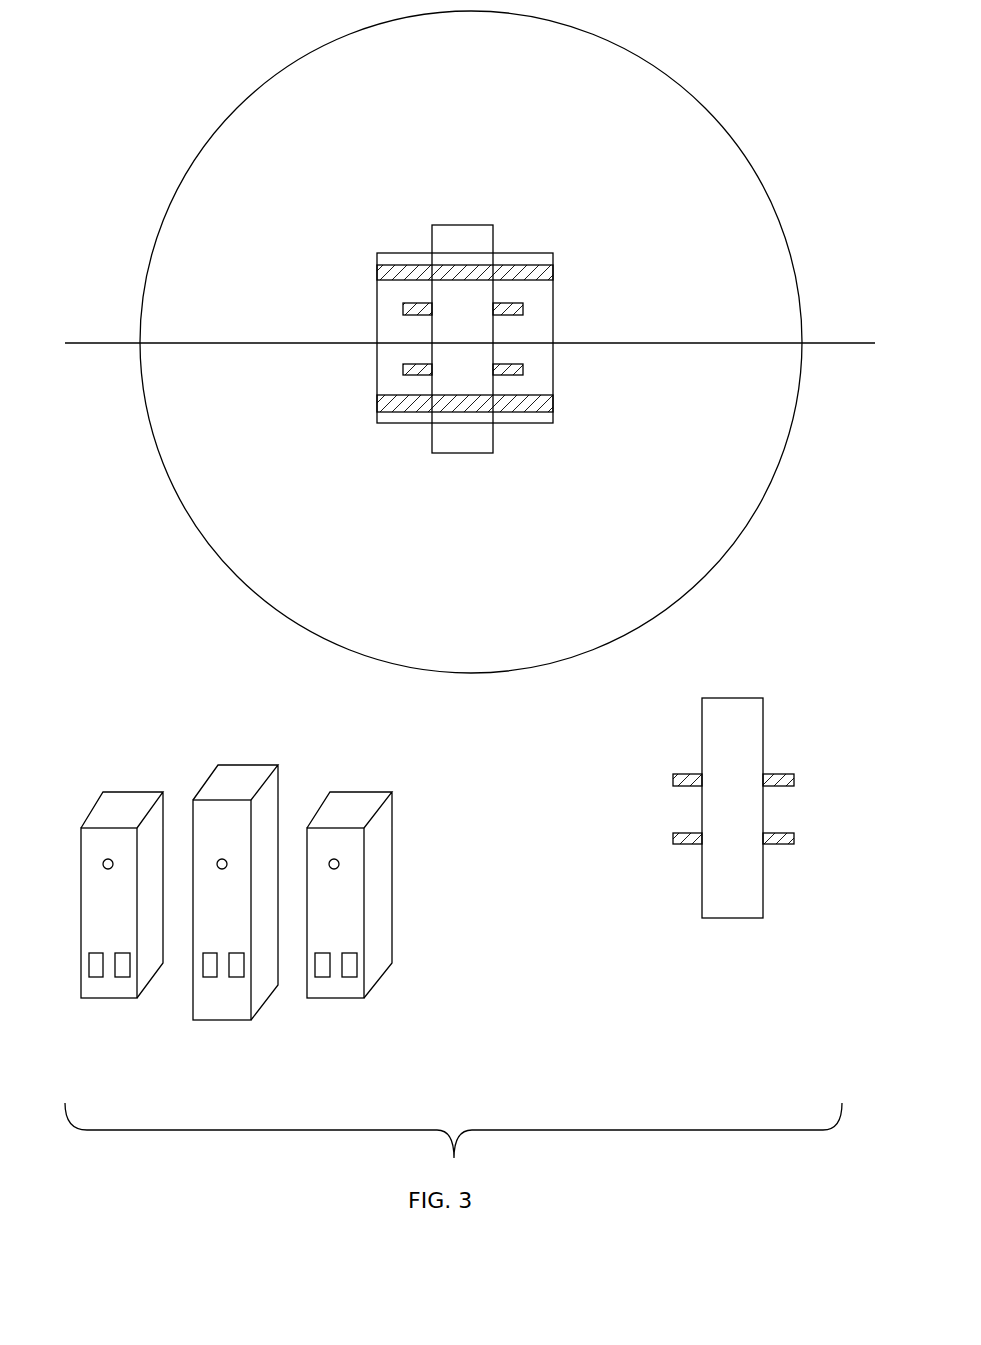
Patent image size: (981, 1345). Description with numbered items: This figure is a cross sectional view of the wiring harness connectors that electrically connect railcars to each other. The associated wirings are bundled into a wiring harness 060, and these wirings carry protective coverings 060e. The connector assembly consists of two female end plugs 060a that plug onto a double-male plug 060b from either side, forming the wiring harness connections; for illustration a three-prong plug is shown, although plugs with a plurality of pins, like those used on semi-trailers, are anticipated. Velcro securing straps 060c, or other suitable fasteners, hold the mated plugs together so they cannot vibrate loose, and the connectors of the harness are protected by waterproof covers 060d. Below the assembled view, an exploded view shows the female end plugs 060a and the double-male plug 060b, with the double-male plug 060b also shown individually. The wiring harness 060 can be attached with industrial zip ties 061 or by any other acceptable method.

The wiring harness 060 is at (474, 343).
The industrial zip ties 061 is at (108, 343).
The female end plugs 060a is at (402, 423).
The double-male plugs 060b is at (462, 453).
The Velcro securing straps 060c is at (553, 272).
The waterproof covers 060d is at (778, 221).
The protective coverings 060e is at (837, 343).